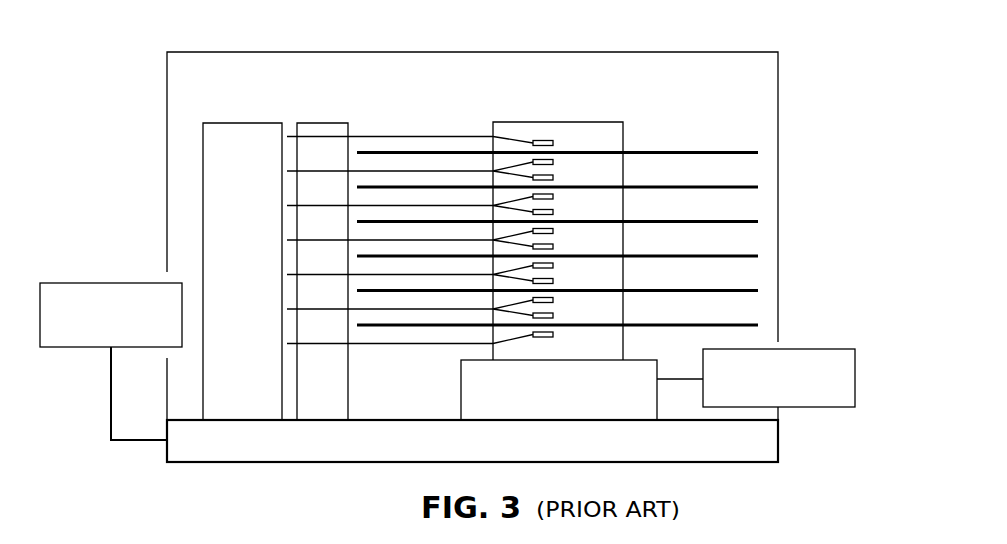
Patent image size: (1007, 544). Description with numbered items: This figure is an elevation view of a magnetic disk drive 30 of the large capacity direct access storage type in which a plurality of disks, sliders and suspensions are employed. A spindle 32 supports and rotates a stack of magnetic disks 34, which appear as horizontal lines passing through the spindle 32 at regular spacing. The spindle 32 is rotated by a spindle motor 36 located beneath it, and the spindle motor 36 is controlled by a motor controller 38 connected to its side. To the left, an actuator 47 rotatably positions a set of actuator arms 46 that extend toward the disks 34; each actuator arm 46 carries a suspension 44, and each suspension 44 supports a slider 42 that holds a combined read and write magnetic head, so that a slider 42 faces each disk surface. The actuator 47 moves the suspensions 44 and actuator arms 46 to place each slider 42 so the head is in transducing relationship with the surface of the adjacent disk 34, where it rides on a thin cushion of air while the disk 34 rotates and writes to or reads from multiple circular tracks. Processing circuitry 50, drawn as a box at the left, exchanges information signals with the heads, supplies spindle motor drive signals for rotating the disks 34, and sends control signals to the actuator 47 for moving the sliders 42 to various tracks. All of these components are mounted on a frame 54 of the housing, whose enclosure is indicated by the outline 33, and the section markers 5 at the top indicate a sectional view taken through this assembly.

The section line indicator 5 is at (256, 10).
The magnetic disk drive 30 is at (665, 127).
The spindle 32 is at (613, 122).
The housing 33 is at (692, 52).
The magnetic disk 34 is at (758, 153).
The spindle motor 36 is at (572, 400).
The motor controller 38 is at (815, 407).
The slider 42 is at (553, 161).
The suspension 44 is at (518, 168).
The actuator arm 46 is at (462, 170).
The actuator 47 is at (245, 123).
The processing circuitry 50 is at (80, 283).
The frame 54 is at (218, 462).